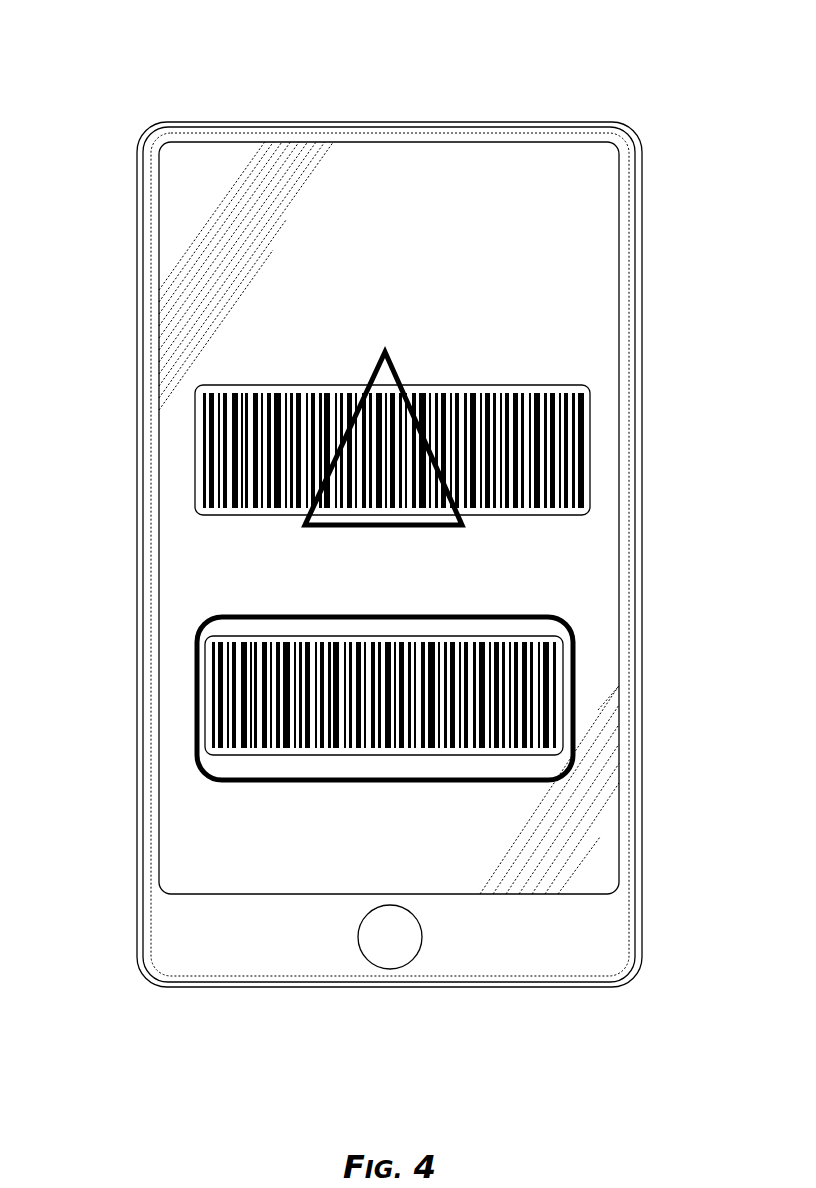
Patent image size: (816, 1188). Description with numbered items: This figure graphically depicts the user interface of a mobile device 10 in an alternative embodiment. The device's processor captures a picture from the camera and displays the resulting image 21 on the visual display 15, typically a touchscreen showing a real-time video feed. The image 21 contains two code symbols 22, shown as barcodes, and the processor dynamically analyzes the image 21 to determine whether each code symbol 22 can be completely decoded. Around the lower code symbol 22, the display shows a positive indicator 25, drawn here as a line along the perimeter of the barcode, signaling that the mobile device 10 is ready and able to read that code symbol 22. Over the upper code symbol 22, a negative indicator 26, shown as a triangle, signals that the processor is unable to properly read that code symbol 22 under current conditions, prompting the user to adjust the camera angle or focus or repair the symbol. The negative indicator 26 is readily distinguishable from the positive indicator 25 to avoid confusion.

The mobile device 10 is at (650, 58).
The visual display 15 is at (163, 348).
The image 21 is at (525, 550).
The code symbol 22 is at (200, 503).
The positive indicator 25 is at (390, 782).
The negative indicator 26 is at (397, 373).